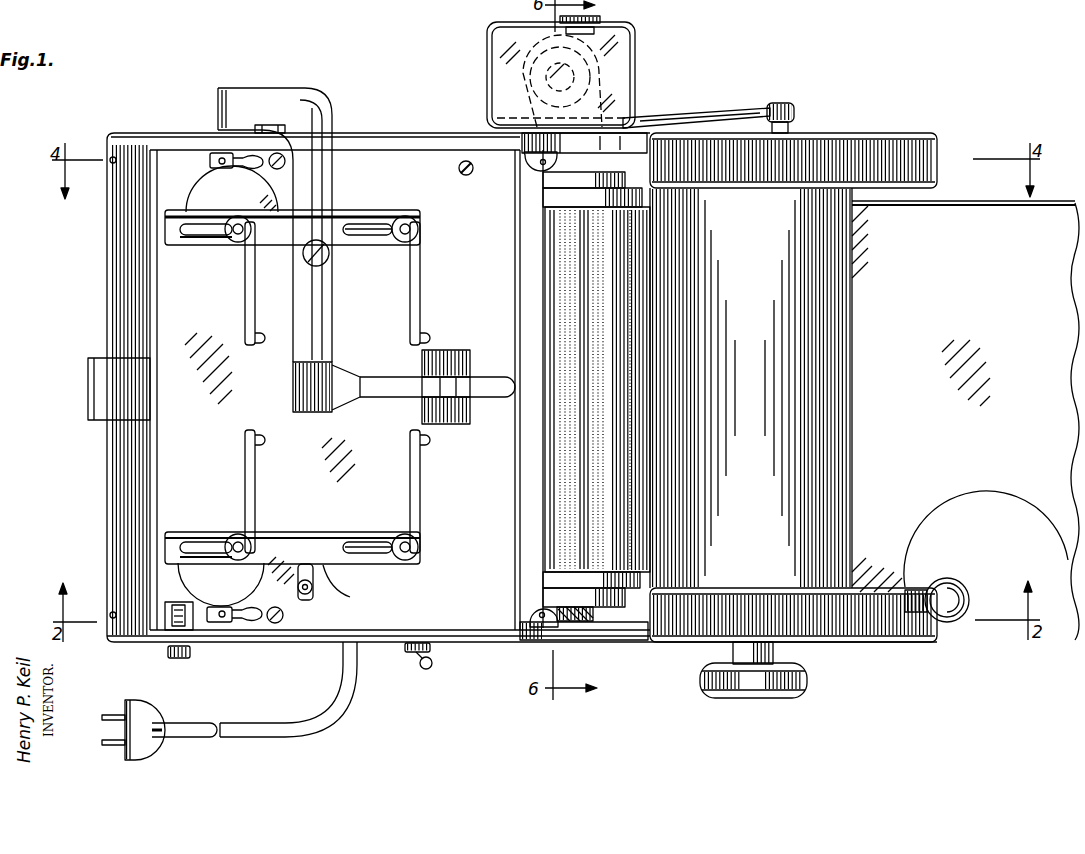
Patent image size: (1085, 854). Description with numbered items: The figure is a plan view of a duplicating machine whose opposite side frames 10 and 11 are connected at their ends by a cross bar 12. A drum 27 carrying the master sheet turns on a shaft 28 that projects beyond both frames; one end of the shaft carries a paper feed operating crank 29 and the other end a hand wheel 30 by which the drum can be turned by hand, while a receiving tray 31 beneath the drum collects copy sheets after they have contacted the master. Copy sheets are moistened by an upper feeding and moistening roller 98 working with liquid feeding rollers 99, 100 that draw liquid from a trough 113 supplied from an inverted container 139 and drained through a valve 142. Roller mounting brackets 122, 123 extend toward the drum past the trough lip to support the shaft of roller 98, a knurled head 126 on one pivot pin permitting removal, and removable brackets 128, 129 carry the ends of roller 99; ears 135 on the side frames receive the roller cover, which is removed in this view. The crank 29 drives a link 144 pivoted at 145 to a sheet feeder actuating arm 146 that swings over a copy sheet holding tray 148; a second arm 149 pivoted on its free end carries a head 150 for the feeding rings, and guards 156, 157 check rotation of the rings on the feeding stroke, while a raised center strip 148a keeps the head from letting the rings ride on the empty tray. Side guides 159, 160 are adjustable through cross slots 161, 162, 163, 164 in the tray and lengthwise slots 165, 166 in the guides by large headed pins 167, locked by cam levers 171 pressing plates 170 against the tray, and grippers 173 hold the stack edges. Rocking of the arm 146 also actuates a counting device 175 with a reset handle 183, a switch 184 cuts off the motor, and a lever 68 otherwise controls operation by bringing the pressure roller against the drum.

The side frame 10 is at (205, 133).
The side frame 11 is at (257, 642).
The cross bar 12 is at (905, 206).
The drum 27 is at (742, 399).
The shaft 28 is at (797, 118).
The paper feed operating crank 29 is at (760, 114).
The hand wheel 30 is at (702, 676).
The receiving tray 31 is at (960, 470).
The lever 68 is at (945, 622).
The upper copy sheet feeding and moistening roller 98 is at (638, 528).
The liquid feeding roller 99 is at (604, 498).
The liquid feeding roller 100 is at (572, 471).
The liquid carrying trough 113 is at (544, 455).
The roller mounting bracket 122 is at (562, 198).
The roller mounting bracket 123 is at (554, 578).
The knurled head 126 is at (531, 625).
The removable bracket 128 is at (604, 181).
The removable bracket 129 is at (562, 597).
The ear 135 is at (546, 164).
The container 139 is at (497, 76).
The valve 142 is at (602, 20).
The link 144 is at (712, 116).
The pivot 145 is at (275, 125).
The sheet feeder actuating arm 146 is at (292, 100).
The copy sheet holding tray 148 is at (162, 298).
The center strip 148a is at (482, 433).
The second arm 149 is at (382, 398).
The head 150 is at (448, 392).
The guard 156 is at (455, 357).
The guard 157 is at (455, 424).
The side guide 159 is at (343, 566).
The side guide 160 is at (360, 213).
The cross slot 161 is at (246, 464).
The cross slot 162 is at (411, 470).
The cross slot 163 is at (412, 300).
The cross slot 164 is at (245, 312).
The slot 165 is at (188, 247).
The slot 166 is at (368, 236).
The large headed pin 167 is at (420, 229).
The plate 170 is at (316, 592).
The cam lever 171 is at (305, 594).
The adjustable gripper 173 is at (194, 236).
The counting device 175 is at (190, 630).
The reset handle 183 is at (182, 660).
The switch 184 is at (412, 656).